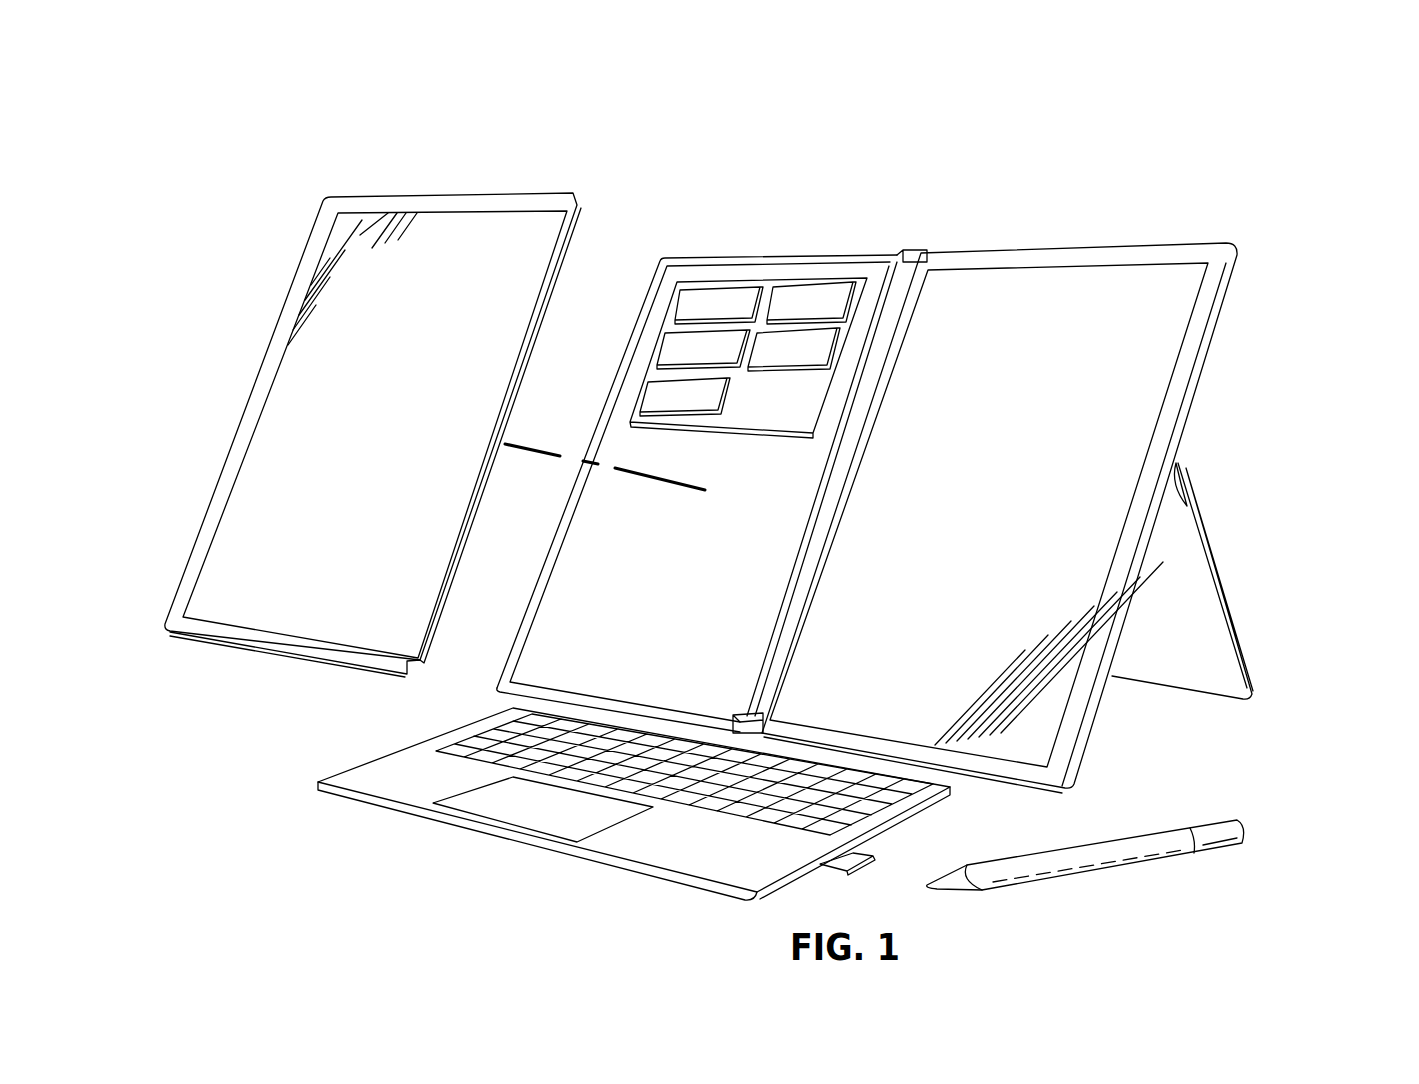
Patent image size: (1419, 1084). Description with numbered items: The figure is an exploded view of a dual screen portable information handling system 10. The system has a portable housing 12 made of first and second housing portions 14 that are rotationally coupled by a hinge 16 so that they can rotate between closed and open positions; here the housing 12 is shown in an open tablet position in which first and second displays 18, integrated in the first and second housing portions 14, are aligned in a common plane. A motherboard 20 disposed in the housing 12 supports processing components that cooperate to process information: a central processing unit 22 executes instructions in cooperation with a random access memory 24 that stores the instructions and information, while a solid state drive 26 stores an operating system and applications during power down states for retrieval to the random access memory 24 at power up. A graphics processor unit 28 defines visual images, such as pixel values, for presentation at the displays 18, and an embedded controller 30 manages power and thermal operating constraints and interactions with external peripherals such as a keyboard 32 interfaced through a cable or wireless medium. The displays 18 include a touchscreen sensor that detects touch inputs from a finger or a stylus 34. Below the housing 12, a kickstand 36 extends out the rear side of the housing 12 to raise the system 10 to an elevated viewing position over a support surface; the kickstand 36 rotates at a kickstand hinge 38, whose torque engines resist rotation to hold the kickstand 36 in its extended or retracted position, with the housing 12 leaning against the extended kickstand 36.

The information handling system 10 is at (321, 150).
The portable housing 12 is at (1245, 233).
The housing portions 14 is at (1250, 326).
The hinge 16 is at (920, 238).
The displays 18 is at (1072, 218).
The motherboard 20 is at (842, 401).
The central processing unit (CPU) 22 is at (720, 289).
The random access memory (RAM) 24 is at (667, 340).
The solid state drive (SSD) 26 is at (653, 388).
The graphics processor unit (GPU) 28 is at (807, 285).
The embedded controller 30 is at (763, 361).
The keyboard 32 is at (532, 843).
The stylus 34 is at (1103, 868).
The kickstand 36 is at (1257, 668).
The kickstand hinge 38 is at (1197, 505).